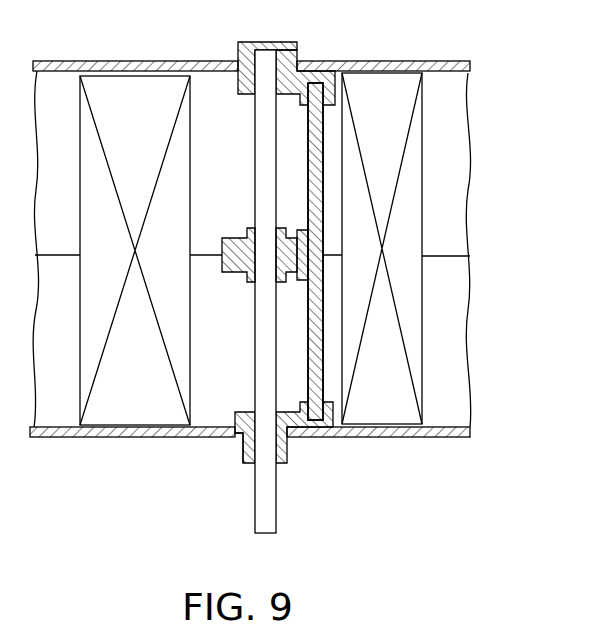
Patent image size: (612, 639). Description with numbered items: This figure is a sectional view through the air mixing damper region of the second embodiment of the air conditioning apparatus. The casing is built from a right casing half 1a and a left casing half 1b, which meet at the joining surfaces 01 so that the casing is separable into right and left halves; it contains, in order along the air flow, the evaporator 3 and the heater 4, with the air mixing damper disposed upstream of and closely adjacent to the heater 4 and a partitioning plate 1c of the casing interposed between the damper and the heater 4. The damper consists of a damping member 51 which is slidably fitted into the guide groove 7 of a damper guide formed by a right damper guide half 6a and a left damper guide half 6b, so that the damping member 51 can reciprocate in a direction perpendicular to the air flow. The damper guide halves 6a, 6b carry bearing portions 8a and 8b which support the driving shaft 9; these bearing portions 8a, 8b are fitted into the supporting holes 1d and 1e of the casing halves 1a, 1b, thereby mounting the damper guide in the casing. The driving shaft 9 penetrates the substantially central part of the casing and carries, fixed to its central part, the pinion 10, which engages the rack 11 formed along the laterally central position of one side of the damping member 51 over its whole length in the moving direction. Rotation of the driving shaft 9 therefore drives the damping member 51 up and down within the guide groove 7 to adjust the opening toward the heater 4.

The right casing half 1a is at (62, 64).
The left casing half 1b is at (47, 438).
The partitioning plate 1c is at (351, 438).
The supporting hole 1d is at (283, 55).
The supporting hole 1e is at (236, 452).
The evaporator 3 is at (130, 400).
The heater 4 is at (405, 410).
The right damper guide half 6a is at (288, 80).
The left damper guide half 6b is at (303, 438).
The guide groove 7 is at (350, 64).
The bearing portion 8a is at (240, 61).
The bearing portion 8b is at (226, 436).
The driving shaft 9 is at (264, 522).
The pinion 10 is at (238, 258).
The rack 11 is at (302, 283).
The damping member 51 is at (316, 136).
The joining surfaces 01 is at (443, 253).